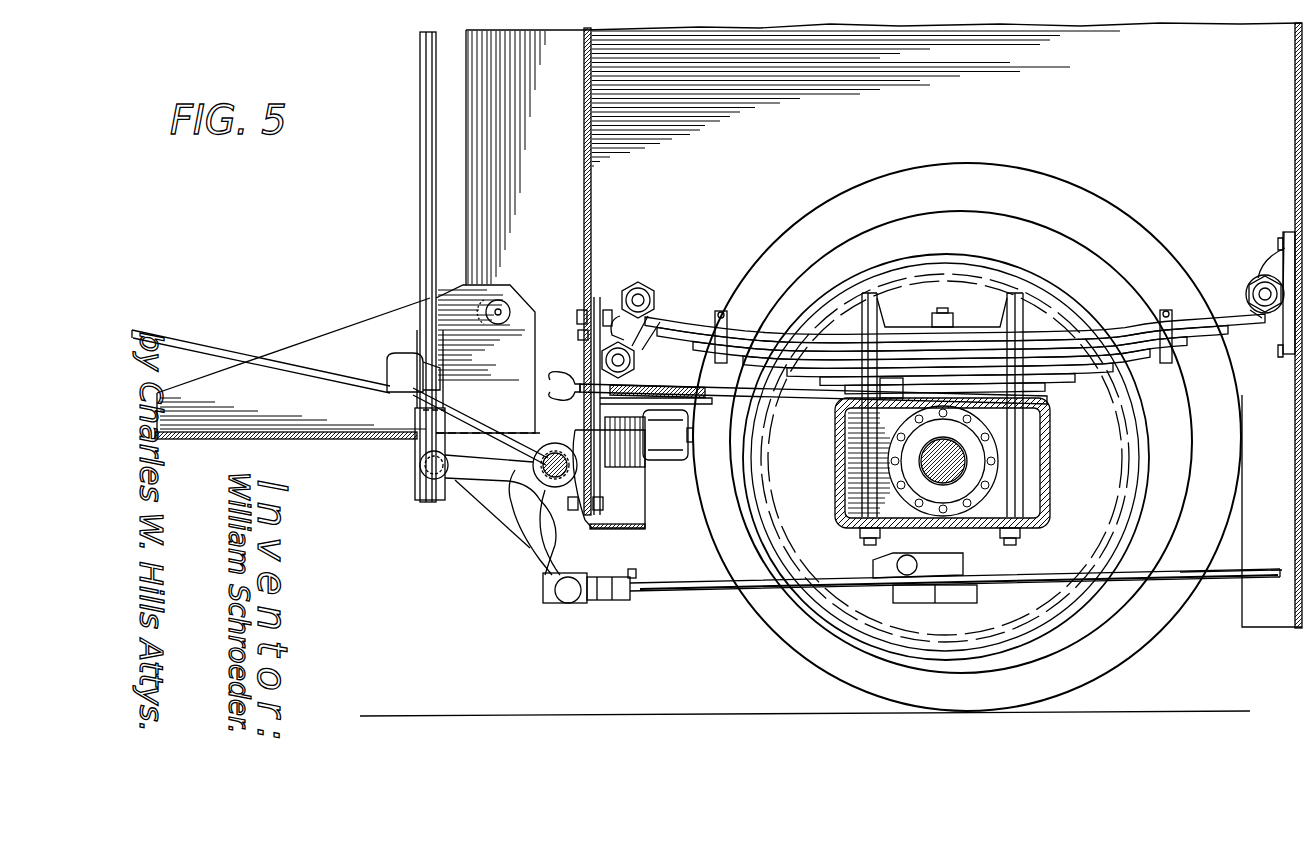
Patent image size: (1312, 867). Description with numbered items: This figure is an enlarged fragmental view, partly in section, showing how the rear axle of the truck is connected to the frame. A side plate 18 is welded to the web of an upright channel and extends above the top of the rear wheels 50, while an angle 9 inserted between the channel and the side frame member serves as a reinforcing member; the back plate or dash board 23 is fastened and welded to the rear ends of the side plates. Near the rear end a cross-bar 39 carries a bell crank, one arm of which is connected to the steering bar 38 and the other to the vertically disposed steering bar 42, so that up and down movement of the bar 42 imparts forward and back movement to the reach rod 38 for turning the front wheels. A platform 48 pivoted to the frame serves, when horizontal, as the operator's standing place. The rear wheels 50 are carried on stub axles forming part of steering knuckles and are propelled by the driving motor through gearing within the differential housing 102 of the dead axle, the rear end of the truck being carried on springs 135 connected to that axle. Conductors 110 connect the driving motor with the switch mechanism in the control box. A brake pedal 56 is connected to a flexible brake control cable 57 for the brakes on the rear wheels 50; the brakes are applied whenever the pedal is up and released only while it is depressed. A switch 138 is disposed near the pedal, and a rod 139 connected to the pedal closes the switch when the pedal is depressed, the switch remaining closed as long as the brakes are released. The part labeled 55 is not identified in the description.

The angle 9 is at (1294, 188).
The side plate 18 is at (943, 94).
The back plate or dash board 23 is at (552, 271).
The steering bar 38 is at (1214, 558).
The cross-bar 39 is at (580, 573).
The steering bar 42 is at (424, 150).
The platform 48 is at (340, 440).
The rear wheels 50 is at (1105, 628).
The rod 55 is at (672, 578).
The brake pedal 56 is at (238, 332).
The flexible brake control cable 57 is at (700, 386).
The differential housing 102 is at (1050, 470).
The conductors 110 is at (530, 547).
The springs 135 is at (1112, 325).
The switch 138 is at (660, 455).
The rod 139 is at (606, 479).